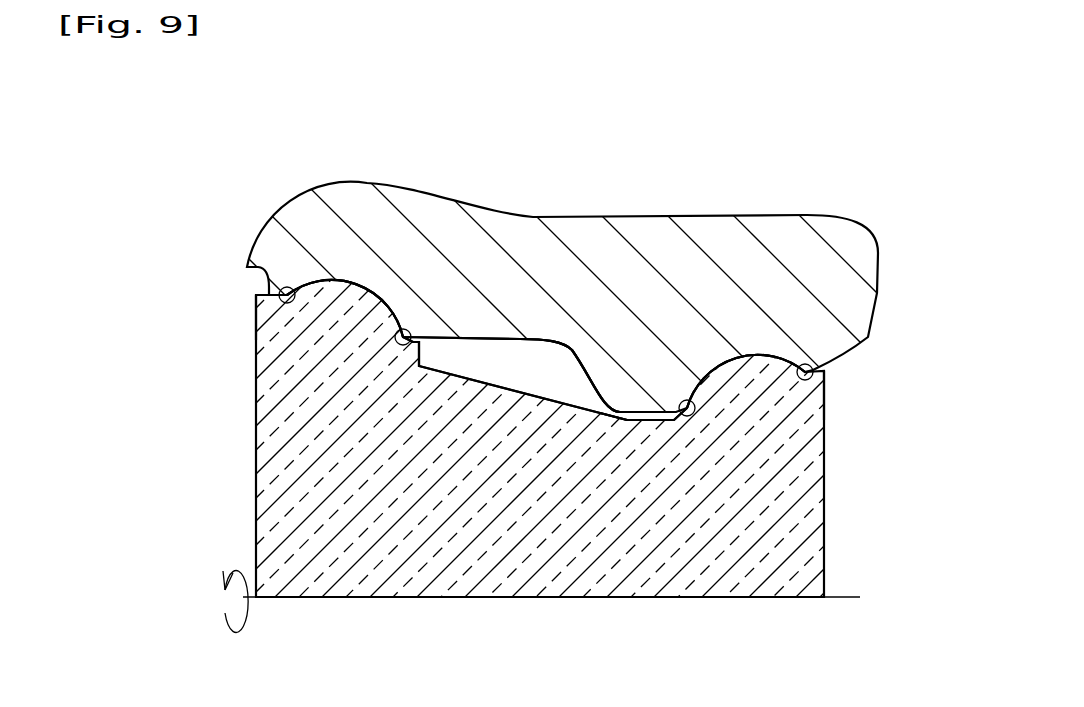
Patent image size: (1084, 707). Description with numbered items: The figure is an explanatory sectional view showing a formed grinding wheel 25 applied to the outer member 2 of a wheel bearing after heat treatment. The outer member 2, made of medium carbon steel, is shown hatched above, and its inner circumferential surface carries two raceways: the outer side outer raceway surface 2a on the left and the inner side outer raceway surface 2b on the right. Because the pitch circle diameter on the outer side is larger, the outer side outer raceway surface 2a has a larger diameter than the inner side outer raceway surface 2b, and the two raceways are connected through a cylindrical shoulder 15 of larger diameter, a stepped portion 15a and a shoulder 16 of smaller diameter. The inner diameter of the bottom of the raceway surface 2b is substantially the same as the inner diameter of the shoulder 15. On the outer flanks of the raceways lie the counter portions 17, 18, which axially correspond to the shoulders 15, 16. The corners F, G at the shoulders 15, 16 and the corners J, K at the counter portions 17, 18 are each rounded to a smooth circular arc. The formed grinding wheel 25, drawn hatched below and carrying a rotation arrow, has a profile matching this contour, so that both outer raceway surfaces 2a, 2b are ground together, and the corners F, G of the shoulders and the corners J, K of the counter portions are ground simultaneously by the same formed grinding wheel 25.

The outer member 2 is at (570, 253).
The outer side outer raceway surface 2a is at (348, 301).
The inner side outer raceway surface 2b is at (737, 358).
The cylindrical shoulder 15 is at (477, 340).
The stepped portion 15a is at (557, 340).
The shoulder of a smaller diameter 16 is at (637, 420).
The counter portion 17 is at (258, 322).
The counter portion 18 is at (827, 373).
The formed grinding wheel 25 is at (348, 402).
The corner J is at (287, 281).
The corner F is at (406, 324).
The corner G is at (681, 394).
The corner K is at (809, 356).